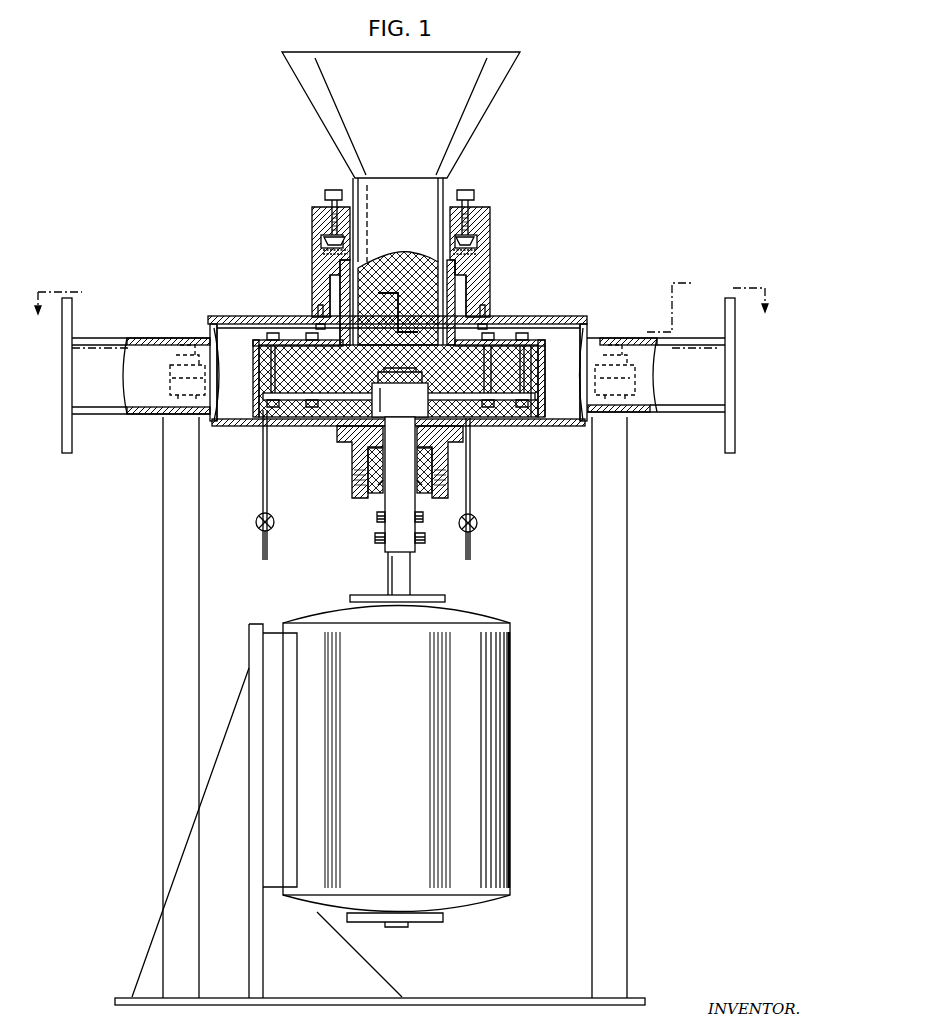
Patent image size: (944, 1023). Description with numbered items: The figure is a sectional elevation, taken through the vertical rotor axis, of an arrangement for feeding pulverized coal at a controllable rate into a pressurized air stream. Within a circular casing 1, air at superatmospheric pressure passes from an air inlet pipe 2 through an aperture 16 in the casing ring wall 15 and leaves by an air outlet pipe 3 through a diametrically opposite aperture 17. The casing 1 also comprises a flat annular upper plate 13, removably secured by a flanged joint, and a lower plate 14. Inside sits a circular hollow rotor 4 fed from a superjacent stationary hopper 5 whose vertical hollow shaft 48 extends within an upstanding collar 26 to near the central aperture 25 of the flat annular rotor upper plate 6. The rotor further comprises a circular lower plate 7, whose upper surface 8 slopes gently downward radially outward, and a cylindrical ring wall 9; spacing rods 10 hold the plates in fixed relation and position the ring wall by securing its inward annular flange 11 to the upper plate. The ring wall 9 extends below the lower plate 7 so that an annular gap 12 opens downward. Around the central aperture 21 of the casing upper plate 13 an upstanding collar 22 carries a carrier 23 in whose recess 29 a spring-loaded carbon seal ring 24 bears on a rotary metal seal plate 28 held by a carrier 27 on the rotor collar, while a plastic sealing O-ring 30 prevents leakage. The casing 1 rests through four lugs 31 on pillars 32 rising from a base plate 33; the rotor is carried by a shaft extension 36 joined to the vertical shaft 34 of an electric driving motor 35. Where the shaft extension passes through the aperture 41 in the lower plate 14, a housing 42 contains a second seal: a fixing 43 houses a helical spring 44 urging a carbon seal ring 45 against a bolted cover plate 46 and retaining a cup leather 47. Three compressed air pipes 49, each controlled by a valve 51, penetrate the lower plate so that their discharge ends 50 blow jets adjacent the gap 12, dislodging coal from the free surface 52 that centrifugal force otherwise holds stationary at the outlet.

The circular casing 1 is at (571, 307).
The air inlet pipe 2 is at (712, 338).
The air outlet pipe 3 is at (94, 339).
The circular hollow rotor 4 is at (549, 346).
The stationary hopper 5 is at (492, 88).
The rotor upper plate 6 is at (490, 347).
The rotor lower plate 7 is at (535, 407).
The upper surface 8 is at (330, 403).
The ring wall 9 is at (254, 375).
The spacing rods 10 is at (260, 362).
The annular flange 11 is at (537, 337).
The annular gap 12 is at (541, 405).
The casing upper plate 13 is at (541, 316).
The casing lower plate 14 is at (533, 430).
The casing ring wall 15 is at (588, 332).
The aperture 16 is at (600, 340).
The aperture 17 is at (207, 343).
The central aperture 21 is at (323, 313).
The upstanding collar 22 is at (492, 298).
The carrier 23 is at (323, 207).
The carbon seal ring 24 is at (327, 239).
The central aperture 25 is at (455, 344).
The upstanding collar 26 is at (337, 293).
The carrier 27 is at (490, 268).
The metal seal plate 28 is at (354, 252).
The recess 29 is at (490, 226).
The plastic sealing O-ring 30 is at (355, 240).
The lugs 31 is at (622, 398).
The pillars 32 is at (170, 500).
The base plate 33 is at (478, 998).
The vertical shaft 34 is at (402, 571).
The electric driving motor 35 is at (398, 686).
The shaft extension 36 is at (407, 530).
The aperture 41 is at (360, 433).
The housing 42 is at (362, 462).
The fixing 43 is at (444, 452).
The helical spring 44 is at (446, 465).
The carbon seal ring 45 is at (366, 525).
The cover plate 46 is at (434, 525).
The cup leather 47 is at (385, 473).
The vertical hollow shaft 48 is at (344, 272).
The compressed air pipes 49 is at (262, 510).
The discharge end 50 is at (263, 412).
The valves 51 is at (275, 521).
The free surface 52 is at (258, 398).